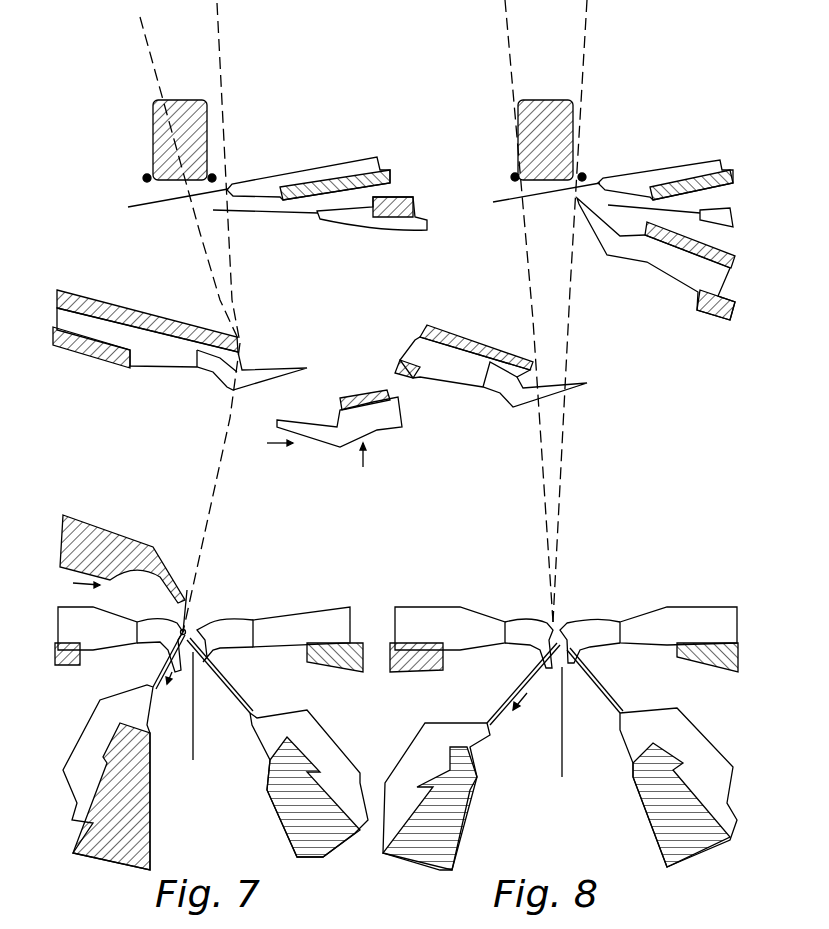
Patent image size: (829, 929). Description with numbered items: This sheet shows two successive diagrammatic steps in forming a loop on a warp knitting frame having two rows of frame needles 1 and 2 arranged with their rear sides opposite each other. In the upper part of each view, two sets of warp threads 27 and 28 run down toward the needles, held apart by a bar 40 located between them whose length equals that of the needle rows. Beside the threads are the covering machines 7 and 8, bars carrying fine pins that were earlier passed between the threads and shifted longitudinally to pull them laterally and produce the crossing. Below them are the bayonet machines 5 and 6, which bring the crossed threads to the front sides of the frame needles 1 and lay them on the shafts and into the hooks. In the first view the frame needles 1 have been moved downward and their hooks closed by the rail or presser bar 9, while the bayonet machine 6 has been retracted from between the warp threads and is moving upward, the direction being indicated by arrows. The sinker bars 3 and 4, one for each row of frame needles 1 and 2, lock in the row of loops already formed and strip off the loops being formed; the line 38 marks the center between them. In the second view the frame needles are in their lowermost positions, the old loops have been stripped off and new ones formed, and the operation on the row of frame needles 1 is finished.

In FIG. 7, the frame needles 1 is at (160, 668).
In FIG. 8, the frame needles 1 is at (509, 699).
In FIG. 7, the frame needles 2 is at (234, 692).
In FIG. 8, the frame needles 2 is at (605, 700).
In FIG. 7, the sinker bars 3 is at (145, 628).
In FIG. 8, the sinker bars 3 is at (517, 626).
In FIG. 7, the sinker bars 4 is at (228, 630).
In FIG. 8, the sinker bars 4 is at (598, 626).
In FIG. 8, the bayonet machine 5 is at (514, 406).
In FIG. 7, the bayonet machine 6 is at (318, 437).
In FIG. 8, the bayonet machine 6 is at (618, 248).
In FIG. 7, the covering machine 7 is at (310, 215).
In FIG. 7, the covering machine 8 is at (260, 183).
In FIG. 8, the covering machine 8 is at (637, 180).
In FIG. 7, the presser bar 9 is at (118, 546).
In FIG. 7, the warp threads 27 is at (191, 262).
In FIG. 8, the warp threads 27 is at (527, 273).
In FIG. 7, the warp threads 28 is at (232, 278).
In FIG. 8, the warp threads 28 is at (568, 316).
In FIG. 7, the yarn end 38 is at (197, 742).
In FIG. 8, the yarn end 38 is at (565, 762).
In FIG. 7, the bar 40 is at (168, 100).
In FIG. 8, the bar 40 is at (538, 100).